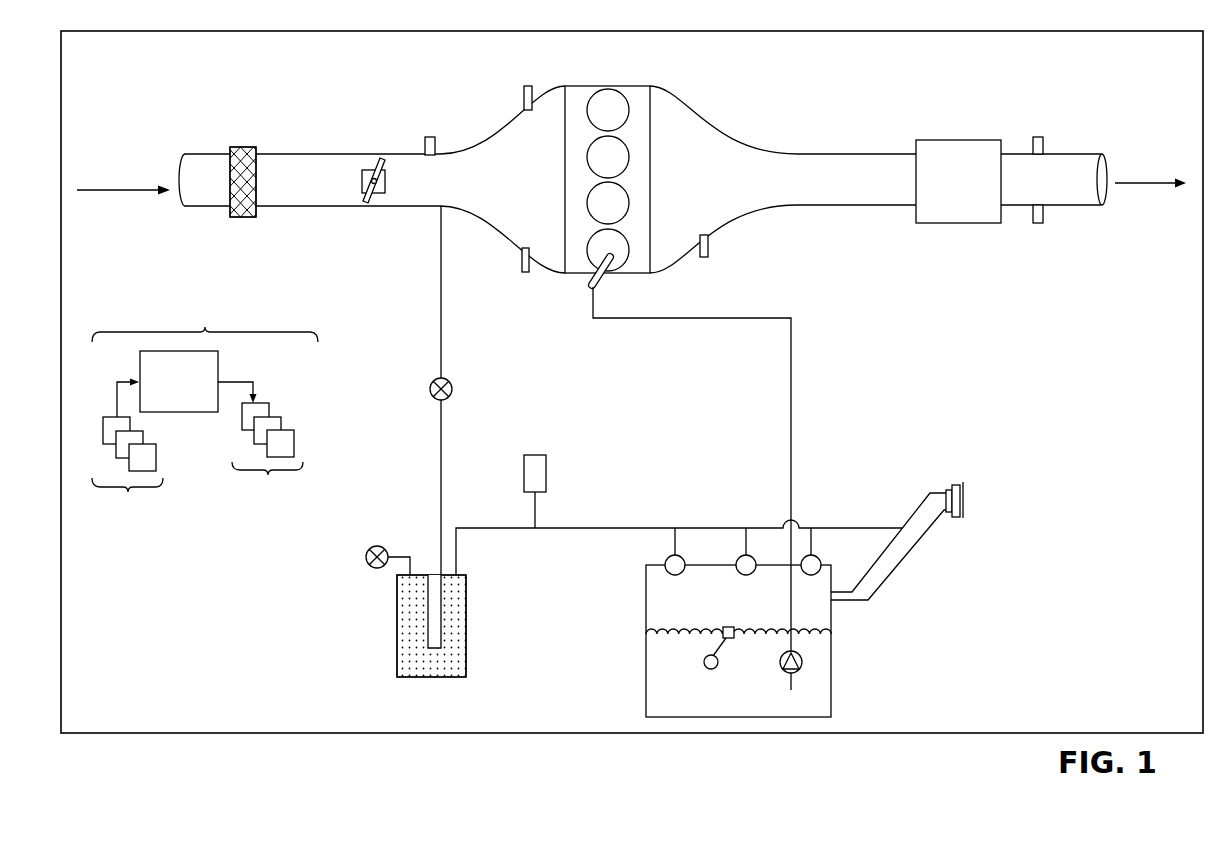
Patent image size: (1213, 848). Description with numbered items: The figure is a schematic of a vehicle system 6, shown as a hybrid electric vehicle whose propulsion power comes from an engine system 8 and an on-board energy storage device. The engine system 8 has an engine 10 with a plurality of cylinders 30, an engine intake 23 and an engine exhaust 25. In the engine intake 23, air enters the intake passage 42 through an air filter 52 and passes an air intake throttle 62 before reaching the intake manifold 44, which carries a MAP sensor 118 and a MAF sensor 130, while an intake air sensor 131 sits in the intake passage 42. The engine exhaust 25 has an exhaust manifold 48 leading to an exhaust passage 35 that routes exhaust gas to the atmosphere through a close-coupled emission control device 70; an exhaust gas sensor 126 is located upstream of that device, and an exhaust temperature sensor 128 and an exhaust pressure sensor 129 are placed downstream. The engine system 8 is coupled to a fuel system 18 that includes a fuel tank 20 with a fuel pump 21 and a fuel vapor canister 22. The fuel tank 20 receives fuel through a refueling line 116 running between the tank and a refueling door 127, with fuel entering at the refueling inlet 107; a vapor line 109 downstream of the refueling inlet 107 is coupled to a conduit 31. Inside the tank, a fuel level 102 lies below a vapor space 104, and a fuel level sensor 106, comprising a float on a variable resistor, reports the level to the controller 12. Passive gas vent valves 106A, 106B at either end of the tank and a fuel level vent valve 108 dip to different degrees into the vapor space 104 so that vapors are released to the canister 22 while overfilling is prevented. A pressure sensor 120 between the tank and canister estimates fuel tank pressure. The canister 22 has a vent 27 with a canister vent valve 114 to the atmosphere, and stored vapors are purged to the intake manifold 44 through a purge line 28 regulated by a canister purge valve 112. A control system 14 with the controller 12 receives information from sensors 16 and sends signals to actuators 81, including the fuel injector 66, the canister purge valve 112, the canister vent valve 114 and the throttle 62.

The vehicle system 6 is at (237, 46).
The engine system 8 is at (972, 98).
The engine 10 is at (625, 179).
The controller 12 is at (179, 381).
The control system 14 is at (205, 406).
The sensors 16 is at (130, 472).
The fuel system 18 is at (806, 504).
The fuel tank 20 is at (646, 588).
The fuel pump 21 is at (802, 665).
The fuel vapor canister 22 is at (453, 677).
The engine intake 23 is at (502, 173).
The engine exhaust 25 is at (783, 178).
The vent 27 is at (366, 557).
The purge line 28 is at (441, 326).
The cylinders 30 is at (626, 104).
The conduit 31 is at (560, 528).
The exhaust passage 35 is at (1082, 153).
The intake passage 42 is at (213, 206).
The intake manifold 44 is at (470, 82).
The exhaust manifold 48 is at (778, 92).
The air filter 52 is at (243, 147).
The air intake throttle 62 is at (384, 186).
The fuel injector 66 is at (603, 273).
The emission control device 70 is at (958, 181).
The actuators 81 is at (275, 457).
The fuel level 102 is at (693, 640).
The vapor space 104 is at (710, 598).
The fuel level sensor 106 is at (733, 638).
The gas vent valve 106A is at (666, 559).
The gas vent valve 106B is at (820, 560).
The refueling inlet 107 is at (957, 483).
The fuel level vent valve 108 is at (738, 557).
The vapor line 109 is at (913, 507).
The canister purge valve 112 is at (450, 381).
The canister vent valve 114 is at (390, 536).
The refueling line 116 is at (913, 545).
The MAP sensor 118 is at (520, 249).
The pressure sensor 120 is at (546, 465).
The exhaust gas sensor 126 is at (708, 239).
The refueling door 127 is at (966, 493).
The exhaust temperature sensor 128 is at (1038, 223).
The exhaust pressure sensor 129 is at (1038, 137).
The MAF sensor 130 is at (529, 86).
The intake air sensor 131 is at (430, 138).